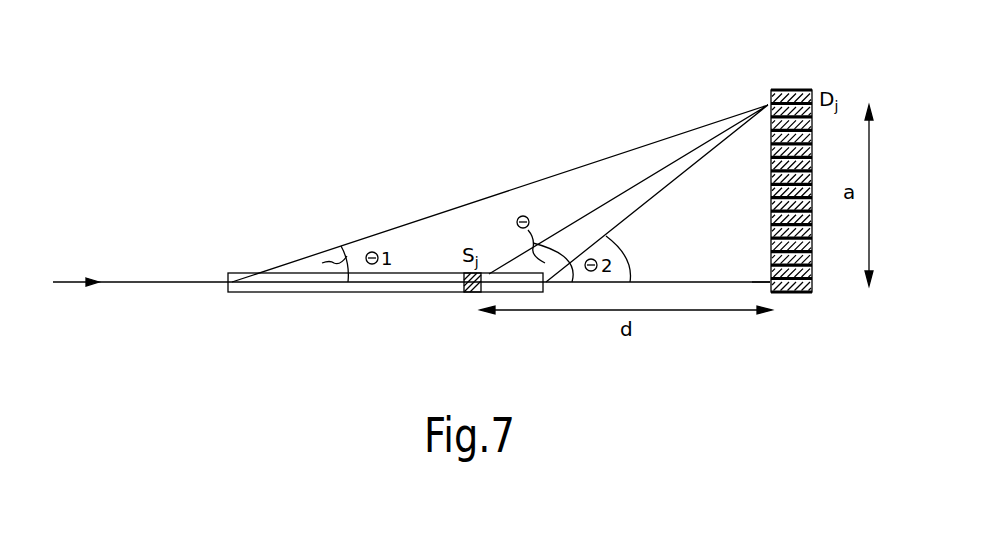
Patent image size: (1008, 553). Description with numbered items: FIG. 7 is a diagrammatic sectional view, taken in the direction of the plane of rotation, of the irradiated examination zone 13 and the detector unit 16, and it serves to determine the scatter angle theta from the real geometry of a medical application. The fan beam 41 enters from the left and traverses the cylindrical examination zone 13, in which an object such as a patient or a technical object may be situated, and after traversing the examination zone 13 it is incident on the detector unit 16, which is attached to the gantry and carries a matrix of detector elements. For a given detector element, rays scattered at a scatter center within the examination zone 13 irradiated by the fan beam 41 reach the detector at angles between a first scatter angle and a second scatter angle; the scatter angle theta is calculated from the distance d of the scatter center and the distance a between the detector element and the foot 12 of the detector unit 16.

The fan beam 41 is at (147, 282).
The examination zone 13 is at (330, 293).
The detector unit 16 is at (787, 90).
The foot of the detector 12 is at (770, 288).